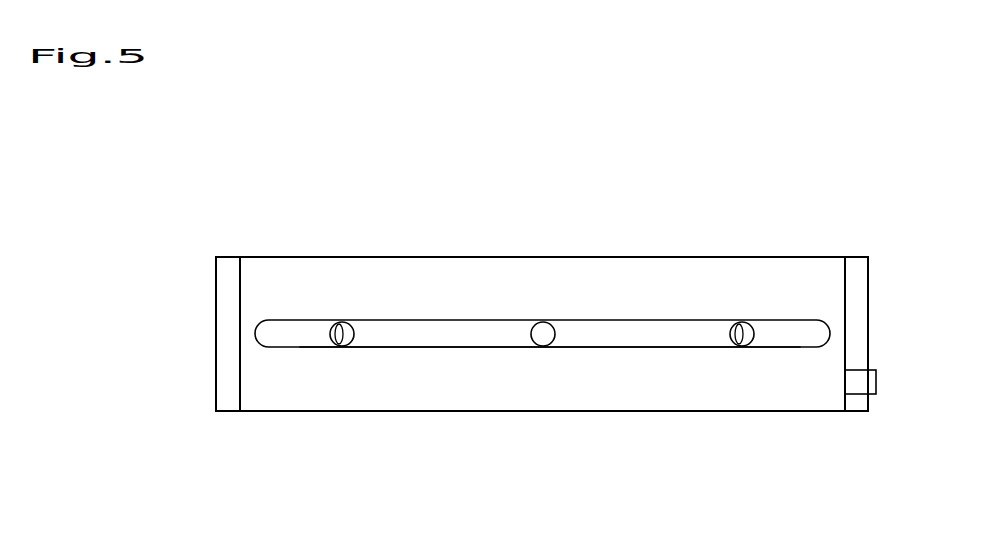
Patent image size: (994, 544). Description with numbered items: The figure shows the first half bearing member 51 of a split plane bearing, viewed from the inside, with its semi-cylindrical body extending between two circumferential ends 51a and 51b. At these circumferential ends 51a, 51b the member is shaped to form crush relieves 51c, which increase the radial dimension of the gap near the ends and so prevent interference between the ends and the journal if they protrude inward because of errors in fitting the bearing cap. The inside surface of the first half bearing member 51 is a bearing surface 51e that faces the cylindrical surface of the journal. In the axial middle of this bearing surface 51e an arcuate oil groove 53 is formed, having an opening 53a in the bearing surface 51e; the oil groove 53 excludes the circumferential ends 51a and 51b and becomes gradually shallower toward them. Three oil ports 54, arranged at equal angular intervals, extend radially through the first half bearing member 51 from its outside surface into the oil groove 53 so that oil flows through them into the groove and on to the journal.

The first half bearing member 51 is at (622, 232).
The circumferential end 51a is at (253, 383).
The circumferential end 51b is at (815, 398).
The crush relief 51c is at (242, 290).
The bearing surface 51e is at (718, 282).
The oil groove 53 is at (468, 335).
The opening 53a is at (672, 332).
The oil port 54 is at (343, 340).